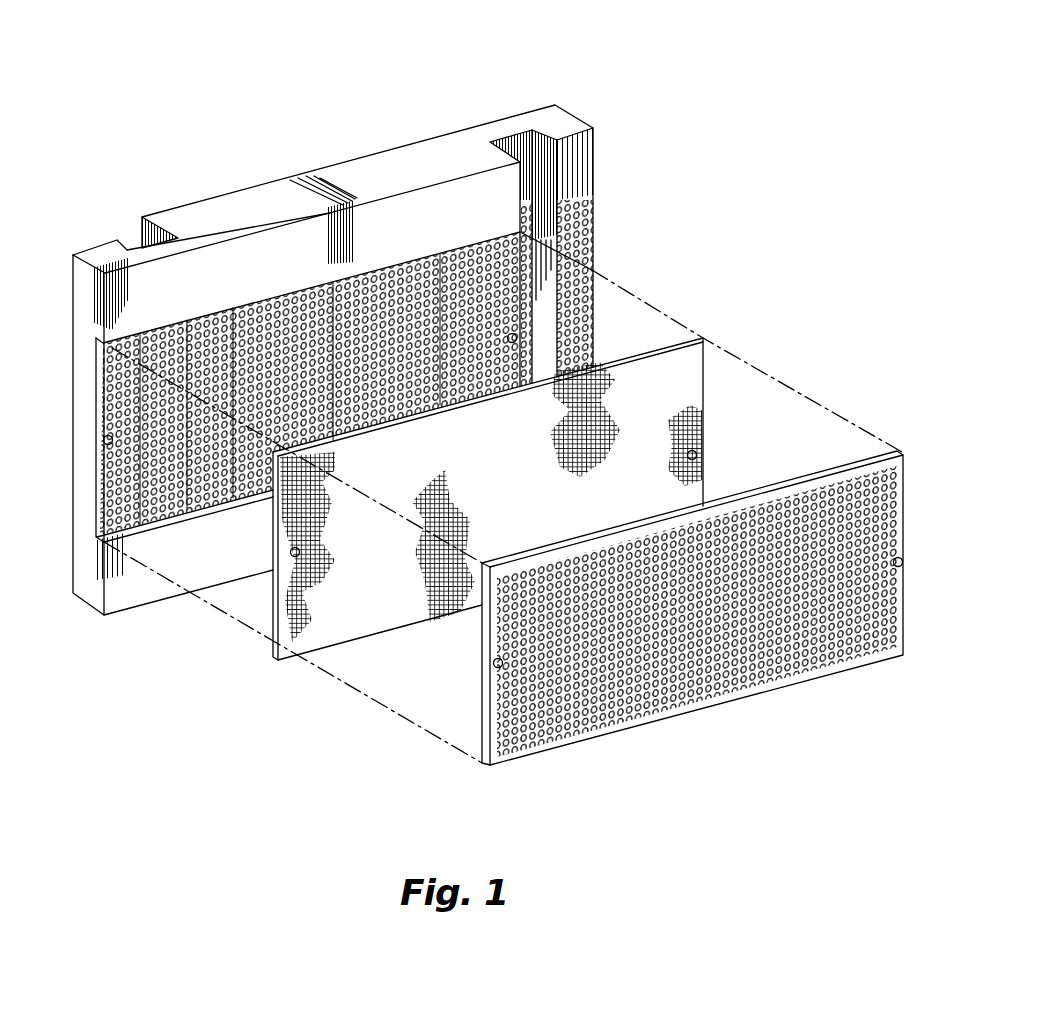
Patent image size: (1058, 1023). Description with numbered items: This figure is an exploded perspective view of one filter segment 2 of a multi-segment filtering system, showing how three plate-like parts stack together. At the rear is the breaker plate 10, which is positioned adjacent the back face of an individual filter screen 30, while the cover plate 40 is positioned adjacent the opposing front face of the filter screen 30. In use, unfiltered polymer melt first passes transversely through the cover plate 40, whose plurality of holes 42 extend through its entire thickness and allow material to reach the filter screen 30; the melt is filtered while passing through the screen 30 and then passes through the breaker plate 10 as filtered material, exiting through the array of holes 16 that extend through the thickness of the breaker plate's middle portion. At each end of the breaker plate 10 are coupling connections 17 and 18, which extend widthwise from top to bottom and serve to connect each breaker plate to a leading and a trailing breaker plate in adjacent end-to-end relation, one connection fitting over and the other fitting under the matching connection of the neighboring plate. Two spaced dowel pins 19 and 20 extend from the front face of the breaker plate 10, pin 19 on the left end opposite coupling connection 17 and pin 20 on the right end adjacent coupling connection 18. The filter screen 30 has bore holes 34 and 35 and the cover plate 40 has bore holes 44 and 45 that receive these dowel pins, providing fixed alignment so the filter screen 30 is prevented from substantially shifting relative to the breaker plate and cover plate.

The segment 2 is at (681, 106).
The breaker plate 10 is at (567, 103).
The holes 16 is at (262, 305).
The coupling connection 17 is at (122, 235).
The coupling connection 18 is at (568, 160).
The dowel pin 19 is at (103, 440).
The dowel pin 20 is at (517, 340).
The filter screen 30 is at (707, 334).
The bore hole 34 is at (291, 555).
The bore hole 35 is at (697, 454).
The cover plate 40 is at (902, 448).
The holes 42 is at (645, 712).
The bore hole 44 is at (494, 665).
The bore hole 45 is at (903, 560).